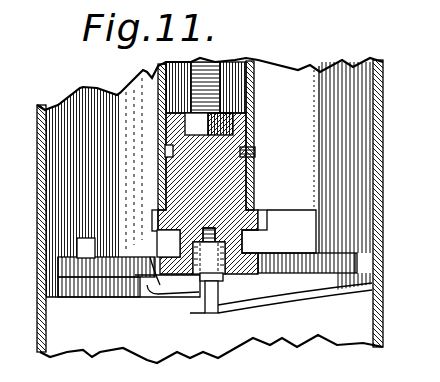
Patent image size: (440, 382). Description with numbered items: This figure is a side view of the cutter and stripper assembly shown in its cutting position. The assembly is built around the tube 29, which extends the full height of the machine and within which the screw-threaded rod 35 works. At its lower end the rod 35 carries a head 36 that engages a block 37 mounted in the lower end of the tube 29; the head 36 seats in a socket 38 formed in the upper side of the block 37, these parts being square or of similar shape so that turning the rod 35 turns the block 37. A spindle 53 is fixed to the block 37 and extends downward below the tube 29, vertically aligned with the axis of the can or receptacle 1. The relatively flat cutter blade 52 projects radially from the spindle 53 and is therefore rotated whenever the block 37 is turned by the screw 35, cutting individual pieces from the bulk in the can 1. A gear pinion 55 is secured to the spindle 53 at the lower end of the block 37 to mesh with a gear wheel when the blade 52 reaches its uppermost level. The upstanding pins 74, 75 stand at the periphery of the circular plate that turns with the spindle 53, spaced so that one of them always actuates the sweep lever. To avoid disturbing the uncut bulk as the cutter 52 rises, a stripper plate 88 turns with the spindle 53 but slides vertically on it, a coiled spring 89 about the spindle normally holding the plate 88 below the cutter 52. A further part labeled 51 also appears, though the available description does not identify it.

The can or receptacle 1 is at (40, 150).
The tube 29 is at (158, 178).
The screw-threaded rod 35 is at (211, 88).
The head 36 is at (221, 125).
The block 37 is at (215, 173).
The socket 38 is at (256, 149).
The ring 51 is at (318, 272).
The cutter blade 52 is at (312, 306).
The spindle 53 is at (218, 288).
The gear pinion 55 is at (265, 217).
The upstanding pin 74 is at (90, 255).
The upstanding pin 75 is at (78, 250).
The stripper plate 88 is at (163, 261).
The coiled spring 89 is at (243, 247).